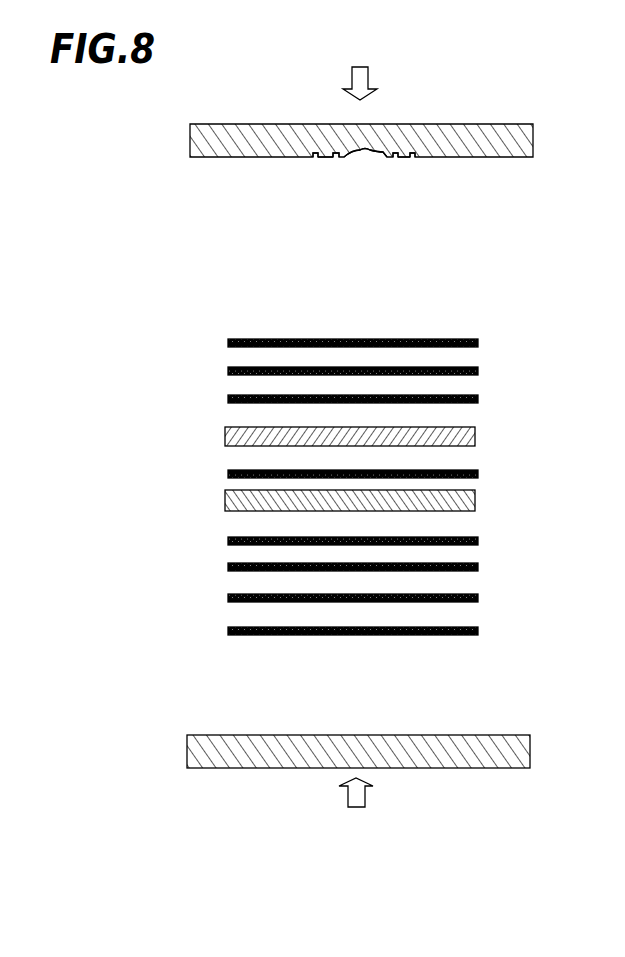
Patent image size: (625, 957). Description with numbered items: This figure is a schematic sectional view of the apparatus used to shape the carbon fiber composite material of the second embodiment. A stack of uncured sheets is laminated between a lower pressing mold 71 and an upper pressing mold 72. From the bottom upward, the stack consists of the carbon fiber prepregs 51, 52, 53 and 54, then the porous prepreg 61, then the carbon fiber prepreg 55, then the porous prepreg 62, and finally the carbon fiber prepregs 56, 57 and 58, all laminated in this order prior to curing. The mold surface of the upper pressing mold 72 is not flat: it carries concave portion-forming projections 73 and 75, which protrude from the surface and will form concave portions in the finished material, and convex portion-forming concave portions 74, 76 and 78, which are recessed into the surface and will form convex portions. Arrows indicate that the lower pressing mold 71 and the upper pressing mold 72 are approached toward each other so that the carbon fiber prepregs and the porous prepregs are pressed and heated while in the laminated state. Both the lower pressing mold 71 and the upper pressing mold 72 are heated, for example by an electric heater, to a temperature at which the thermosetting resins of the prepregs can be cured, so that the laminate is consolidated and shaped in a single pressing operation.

The carbon fiber prepreg 51 is at (480, 631).
The carbon fiber prepreg 52 is at (480, 598).
The carbon fiber prepreg 53 is at (480, 567).
The carbon fiber prepreg 54 is at (480, 541).
The carbon fiber prepreg 55 is at (480, 474).
The carbon fiber prepreg 56 is at (480, 399).
The carbon fiber prepreg 57 is at (480, 371).
The carbon fiber prepreg 58 is at (480, 344).
The porous prepreg 61 is at (478, 500).
The porous prepreg 62 is at (478, 437).
The lower pressing mold 71 is at (460, 765).
The upper pressing mold 72 is at (470, 128).
The concave portion-forming projection 73 is at (317, 160).
The convex portion-forming concave portion 74 is at (327, 160).
The concave portion-forming projection 75 is at (393, 160).
The convex portion-forming concave portion 76 is at (368, 151).
The convex portion-forming concave portion 78 is at (407, 160).